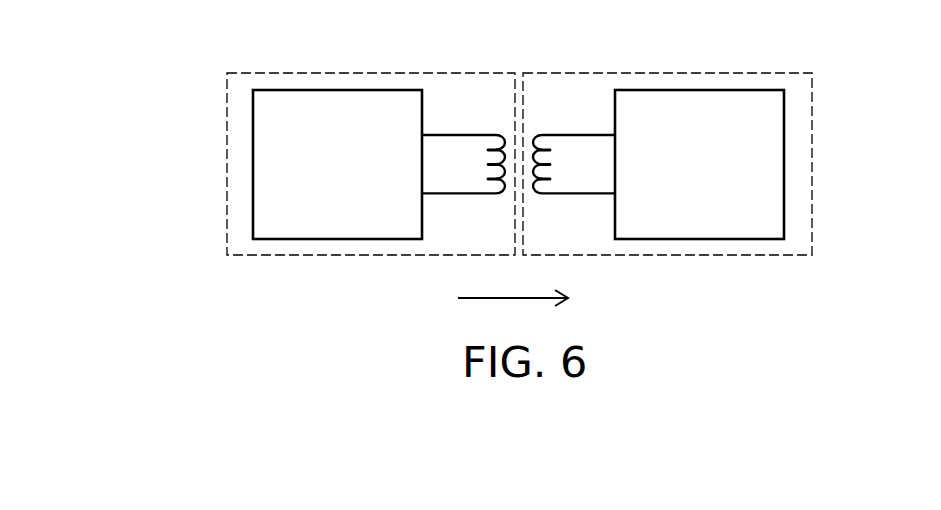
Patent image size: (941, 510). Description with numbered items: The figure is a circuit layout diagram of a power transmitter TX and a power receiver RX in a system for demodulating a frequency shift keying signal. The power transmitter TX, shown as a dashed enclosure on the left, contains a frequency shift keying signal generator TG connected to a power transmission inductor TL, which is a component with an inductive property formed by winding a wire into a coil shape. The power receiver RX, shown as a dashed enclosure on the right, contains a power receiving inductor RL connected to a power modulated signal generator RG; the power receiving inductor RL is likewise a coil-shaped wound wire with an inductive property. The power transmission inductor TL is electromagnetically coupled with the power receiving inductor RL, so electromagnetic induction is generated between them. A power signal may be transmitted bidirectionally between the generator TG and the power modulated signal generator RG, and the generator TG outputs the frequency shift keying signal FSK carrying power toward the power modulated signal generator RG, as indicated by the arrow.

The power transmitter TX is at (227, 163).
The frequency shift keying signal generator TG is at (343, 90).
The power transmission inductor TL is at (461, 135).
The power receiver RX is at (812, 163).
The power modulated signal generator RG is at (697, 90).
The power receiving inductor RL is at (573, 135).
The frequency shift keying signal FSK is at (513, 288).